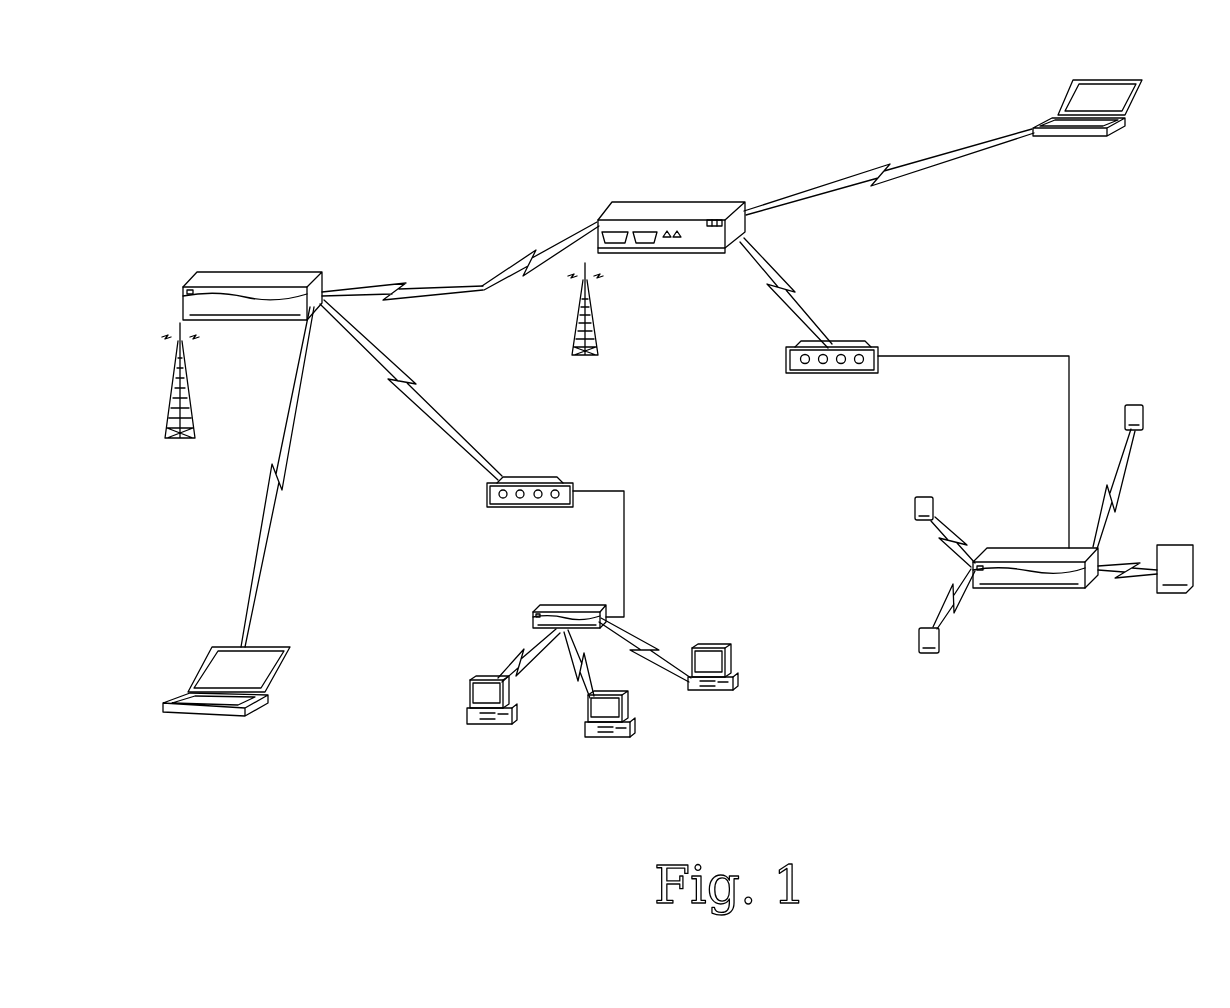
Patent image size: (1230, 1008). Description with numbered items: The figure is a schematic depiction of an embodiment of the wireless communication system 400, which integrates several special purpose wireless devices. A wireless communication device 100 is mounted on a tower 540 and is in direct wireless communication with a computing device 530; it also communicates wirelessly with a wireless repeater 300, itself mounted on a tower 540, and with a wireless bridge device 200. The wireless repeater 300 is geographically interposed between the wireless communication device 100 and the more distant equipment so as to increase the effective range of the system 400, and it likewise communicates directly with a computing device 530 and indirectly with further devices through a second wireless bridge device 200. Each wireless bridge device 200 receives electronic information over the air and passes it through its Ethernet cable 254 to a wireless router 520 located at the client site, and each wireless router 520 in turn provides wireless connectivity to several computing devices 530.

The wireless communication device 100 is at (252, 257).
The wireless bridge device 200 is at (532, 516).
The Ethernet cable 254 is at (640, 531).
The wireless repeater 300 is at (690, 194).
The wireless communication system 400 is at (490, 177).
The wireless router 520 is at (512, 616).
The computing device 530 is at (678, 423).
The tower 540 is at (184, 448).